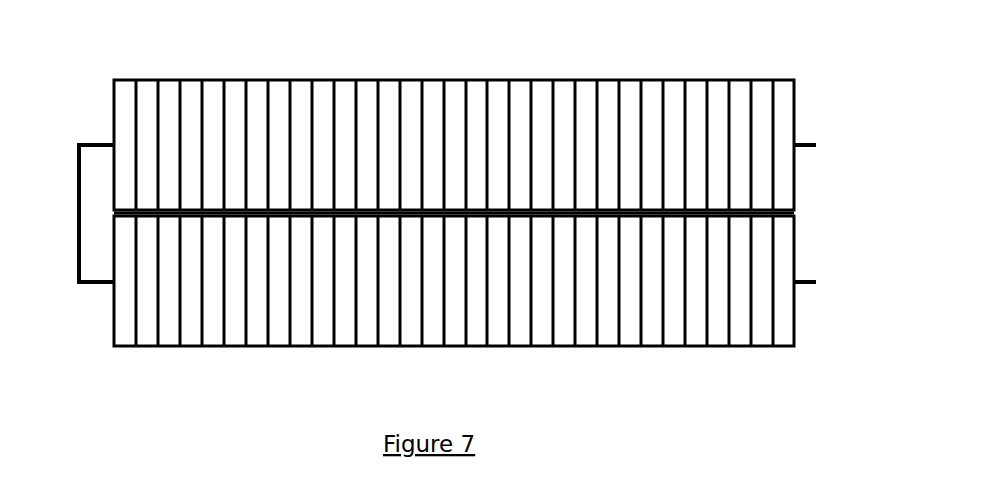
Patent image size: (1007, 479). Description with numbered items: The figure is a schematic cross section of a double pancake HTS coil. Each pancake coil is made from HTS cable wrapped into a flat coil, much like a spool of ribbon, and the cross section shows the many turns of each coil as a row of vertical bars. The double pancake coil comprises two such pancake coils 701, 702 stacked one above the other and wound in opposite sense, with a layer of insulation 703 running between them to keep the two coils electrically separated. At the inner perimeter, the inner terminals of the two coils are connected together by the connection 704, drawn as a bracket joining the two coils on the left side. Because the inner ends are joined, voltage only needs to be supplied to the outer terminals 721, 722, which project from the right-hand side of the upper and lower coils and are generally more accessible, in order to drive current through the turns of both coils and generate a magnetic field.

The pancake coil 701 is at (153, 62).
The pancake coil 702 is at (148, 381).
The insulation 703 is at (794, 215).
The inner terminal connection 704 is at (68, 213).
The outer terminal 721 is at (824, 155).
The outer terminal 722 is at (826, 293).